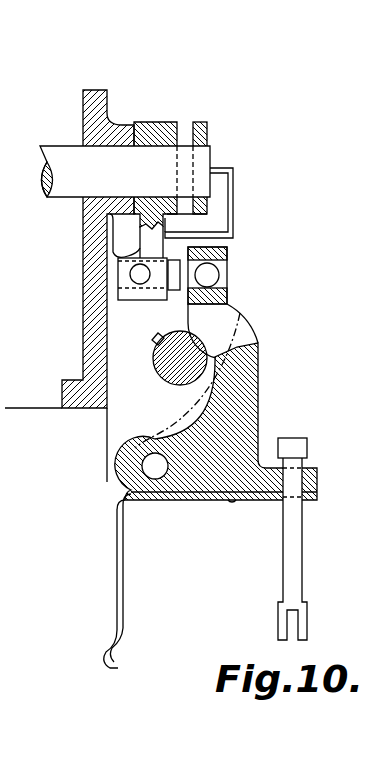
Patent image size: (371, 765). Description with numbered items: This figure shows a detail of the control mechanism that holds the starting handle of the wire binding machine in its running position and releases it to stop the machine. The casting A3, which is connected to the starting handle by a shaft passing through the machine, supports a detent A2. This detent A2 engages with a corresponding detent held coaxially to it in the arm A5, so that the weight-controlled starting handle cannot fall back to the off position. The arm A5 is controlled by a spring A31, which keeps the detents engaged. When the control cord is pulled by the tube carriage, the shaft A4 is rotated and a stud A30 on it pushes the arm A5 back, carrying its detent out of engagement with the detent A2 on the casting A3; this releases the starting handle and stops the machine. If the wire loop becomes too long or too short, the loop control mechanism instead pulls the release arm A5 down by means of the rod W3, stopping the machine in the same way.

The casting A3 is at (113, 258).
The detent A2 is at (176, 285).
The stud A30 is at (155, 342).
The shaft A4 is at (176, 372).
The arm A5 is at (257, 415).
The spring A31 is at (123, 565).
The rod W3 is at (293, 583).